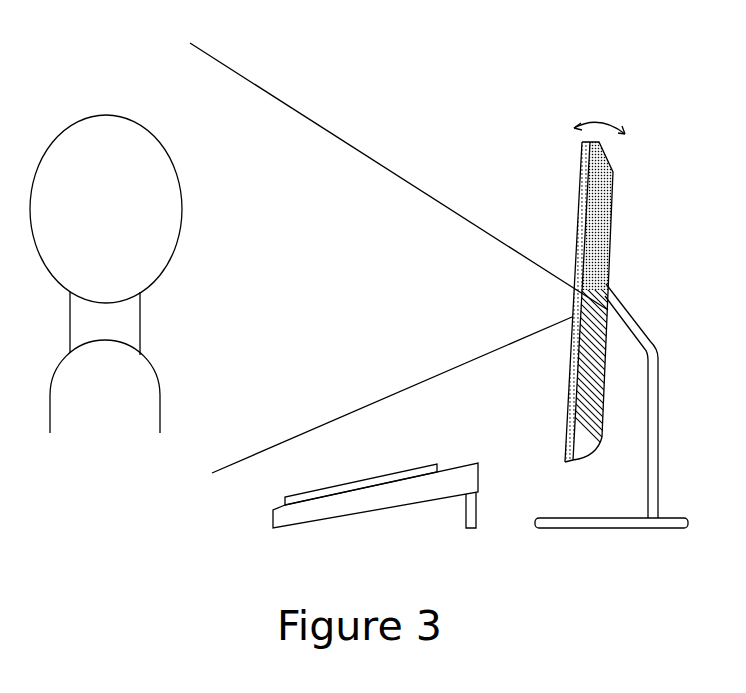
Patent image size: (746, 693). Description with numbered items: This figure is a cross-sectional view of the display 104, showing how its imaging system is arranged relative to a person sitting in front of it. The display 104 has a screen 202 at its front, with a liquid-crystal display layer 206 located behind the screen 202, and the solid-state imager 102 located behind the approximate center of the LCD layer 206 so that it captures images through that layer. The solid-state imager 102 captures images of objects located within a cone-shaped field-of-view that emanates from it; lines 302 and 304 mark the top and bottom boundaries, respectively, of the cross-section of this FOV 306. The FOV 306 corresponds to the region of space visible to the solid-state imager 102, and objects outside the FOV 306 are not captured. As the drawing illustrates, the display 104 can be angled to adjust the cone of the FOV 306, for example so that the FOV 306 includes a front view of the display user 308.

The solid-state imager 102 is at (607, 293).
The display 104 is at (612, 213).
The screen 202 is at (580, 180).
The liquid-crystal display layer 206 is at (572, 468).
The line 302 is at (285, 104).
The line 304 is at (300, 437).
The field-of-view 306 is at (278, 345).
The display user 308 is at (128, 232).